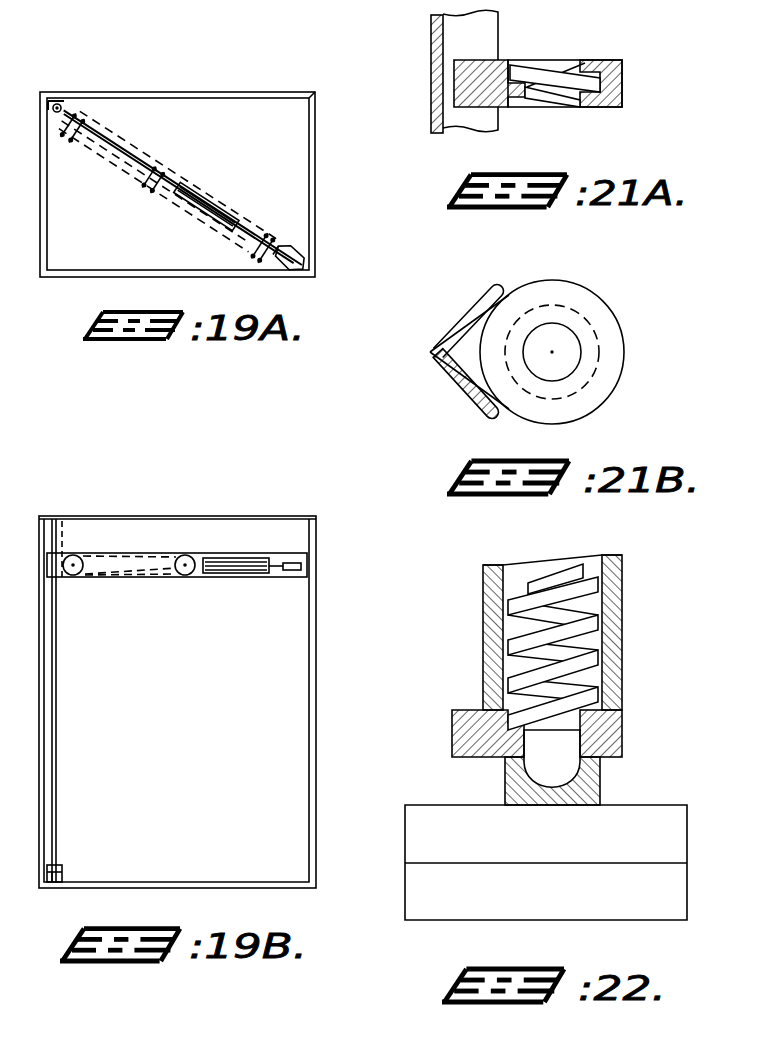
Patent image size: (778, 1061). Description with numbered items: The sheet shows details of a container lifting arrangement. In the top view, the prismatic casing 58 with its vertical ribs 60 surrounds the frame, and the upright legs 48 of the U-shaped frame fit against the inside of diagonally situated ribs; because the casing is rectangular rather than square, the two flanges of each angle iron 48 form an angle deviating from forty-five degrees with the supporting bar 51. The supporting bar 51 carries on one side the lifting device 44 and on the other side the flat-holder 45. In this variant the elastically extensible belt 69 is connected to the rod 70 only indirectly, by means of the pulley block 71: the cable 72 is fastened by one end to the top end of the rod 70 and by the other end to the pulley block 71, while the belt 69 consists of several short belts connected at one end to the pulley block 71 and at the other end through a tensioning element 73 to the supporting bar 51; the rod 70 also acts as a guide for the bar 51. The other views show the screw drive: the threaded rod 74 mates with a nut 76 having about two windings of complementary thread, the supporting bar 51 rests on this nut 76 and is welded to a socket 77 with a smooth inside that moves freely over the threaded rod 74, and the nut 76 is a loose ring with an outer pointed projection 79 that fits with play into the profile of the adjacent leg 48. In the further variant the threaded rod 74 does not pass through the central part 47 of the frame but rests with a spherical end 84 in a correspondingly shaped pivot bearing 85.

In FIG. 19A, the lifting device 44 is at (110, 172).
In FIG. 19B, the lifting device 44 is at (213, 536).
In FIG. 19A, the flat-holder 45 is at (206, 186).
In FIG. 22, the centre part of the frame 47 is at (435, 820).
In FIG. 21A, the leg of the frame 48 is at (437, 62).
In FIG. 21B, the leg of the frame 48 is at (452, 372).
In FIG. 19B, the supporting bar 51 is at (196, 582).
In FIG. 19A, the casing 58 is at (180, 92).
In FIG. 19A, the vertical ribs 60 is at (313, 92).
In FIG. 19B, the elastically extensible belt 69 is at (249, 558).
In FIG. 19B, the rod 70 is at (58, 699).
In FIG. 19B, the pulley block 71 is at (182, 555).
In FIG. 19B, the cable 72 is at (65, 535).
In FIG. 19B, the tensioning element 73 is at (293, 563).
In FIG. 22, the threaded rod 74 is at (580, 592).
In FIG. 21A, the nut 76 is at (602, 62).
In FIG. 21B, the nut 76 is at (587, 300).
In FIG. 22, the nut 76 is at (618, 736).
In FIG. 22, the socket 77 is at (613, 638).
In FIG. 21A, the pointed projection 79 is at (470, 96).
In FIG. 21B, the pointed projection 79 is at (483, 342).
In FIG. 22, the pointed projection 79 is at (471, 721).
In FIG. 22, the spherical end 84 is at (550, 772).
In FIG. 22, the pivot bearing 85 is at (600, 791).